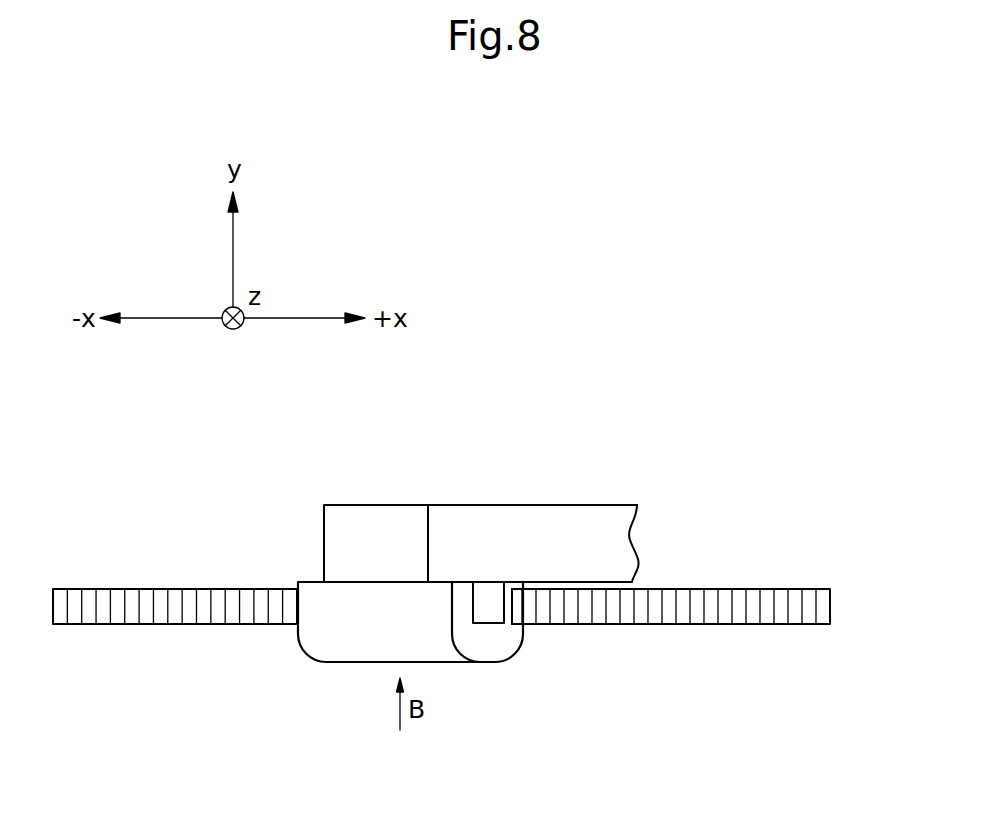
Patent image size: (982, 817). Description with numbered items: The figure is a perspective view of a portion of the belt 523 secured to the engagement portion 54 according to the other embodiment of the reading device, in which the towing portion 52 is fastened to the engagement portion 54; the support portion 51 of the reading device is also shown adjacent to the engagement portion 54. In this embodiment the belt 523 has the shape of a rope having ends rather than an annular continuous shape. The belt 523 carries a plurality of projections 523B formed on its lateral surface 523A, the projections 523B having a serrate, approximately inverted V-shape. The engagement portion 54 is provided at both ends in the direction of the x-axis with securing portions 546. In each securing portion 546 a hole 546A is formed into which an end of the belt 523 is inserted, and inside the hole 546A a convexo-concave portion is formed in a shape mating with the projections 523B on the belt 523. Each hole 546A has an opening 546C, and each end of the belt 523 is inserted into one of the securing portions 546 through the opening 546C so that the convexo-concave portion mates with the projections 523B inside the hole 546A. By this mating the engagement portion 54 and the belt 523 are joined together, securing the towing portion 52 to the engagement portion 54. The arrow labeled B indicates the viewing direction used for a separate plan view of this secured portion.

The support portion 51 is at (368, 522).
The towing portion 52 is at (690, 563).
The belt 523 is at (701, 642).
The lateral surface 523A is at (805, 605).
The projections 523B is at (773, 607).
The engagement portion 54 is at (312, 643).
The securing portion 546 is at (490, 595).
The hole 546A is at (508, 602).
The opening 546C is at (520, 640).